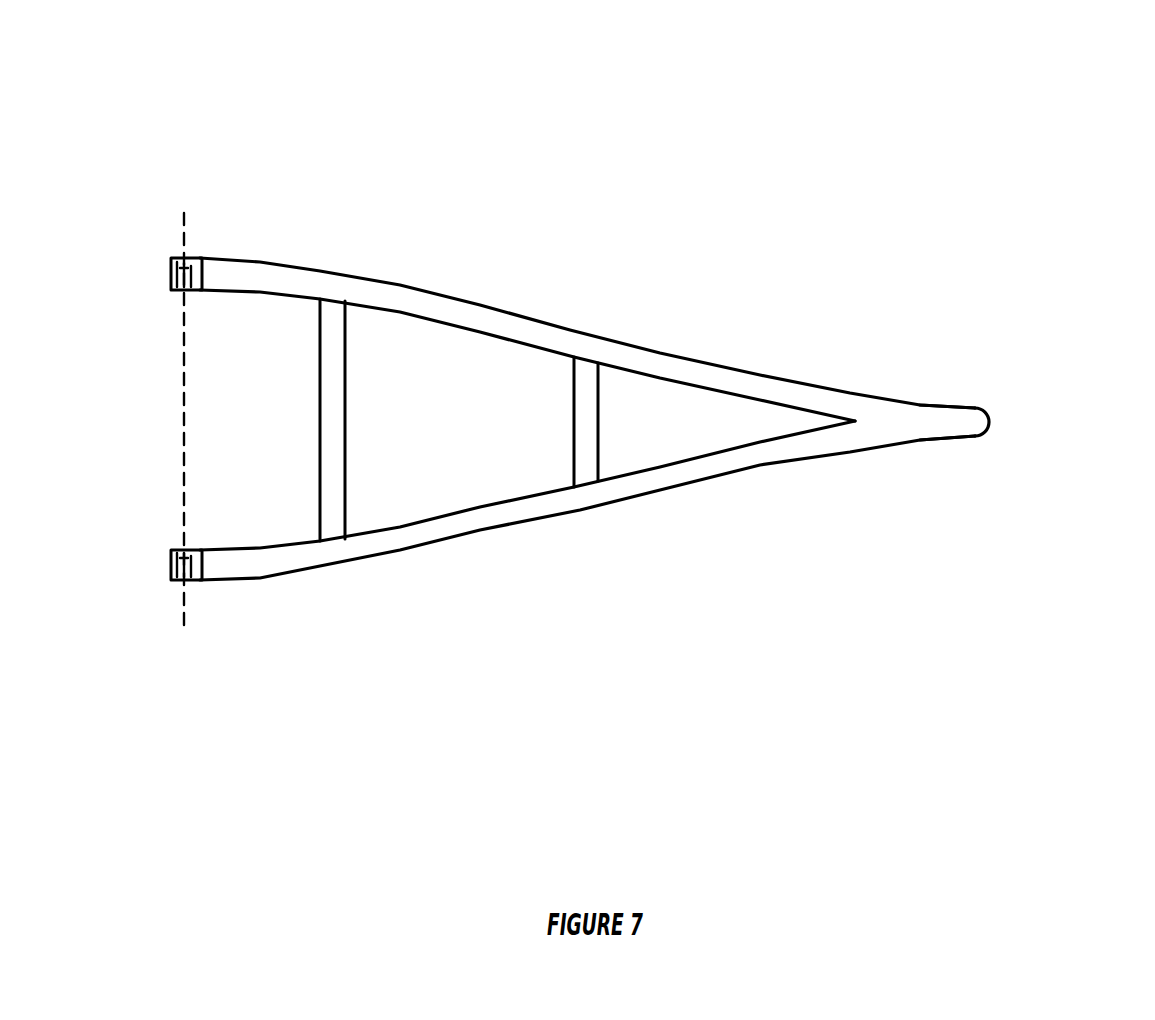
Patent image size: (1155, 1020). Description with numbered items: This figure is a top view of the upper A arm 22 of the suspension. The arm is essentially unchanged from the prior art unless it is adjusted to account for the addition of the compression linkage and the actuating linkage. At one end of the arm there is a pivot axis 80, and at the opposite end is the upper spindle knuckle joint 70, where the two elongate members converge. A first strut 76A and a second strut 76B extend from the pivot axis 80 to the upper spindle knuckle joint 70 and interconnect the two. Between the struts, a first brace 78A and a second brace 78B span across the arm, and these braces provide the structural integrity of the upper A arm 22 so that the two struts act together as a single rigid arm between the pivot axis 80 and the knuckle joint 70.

The upper A arm 22 is at (1005, 183).
The upper spindle knuckle joint 70 is at (973, 458).
The first strut 76A is at (552, 328).
The second strut 76B is at (427, 550).
The first brace 78A is at (345, 381).
The second brace 78B is at (598, 430).
The pivot axis 80 is at (187, 607).